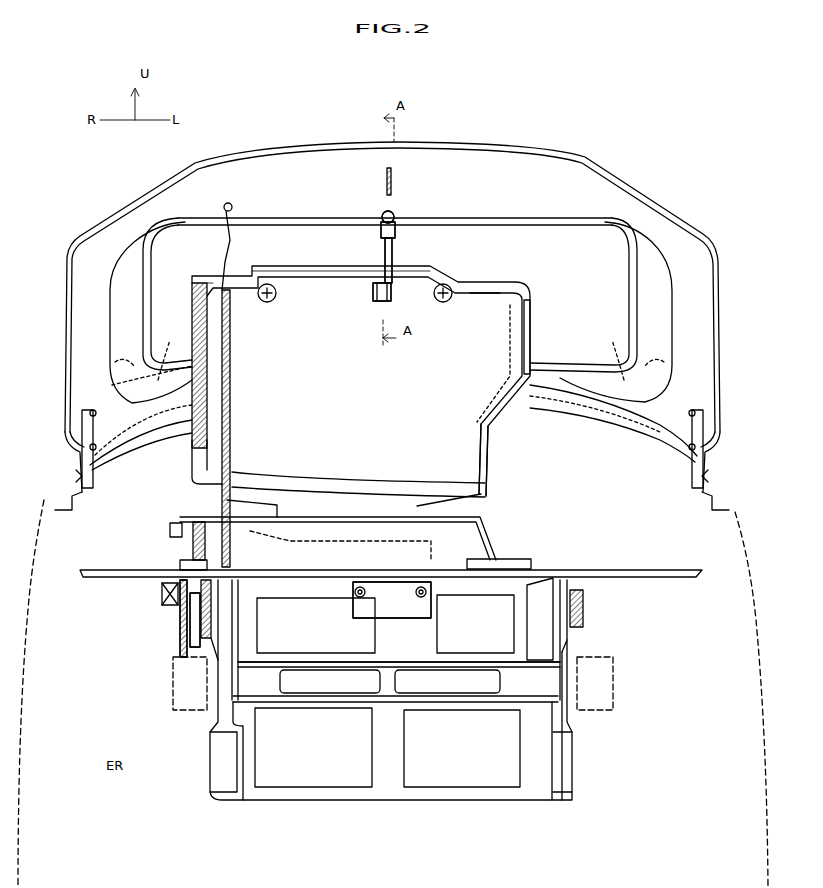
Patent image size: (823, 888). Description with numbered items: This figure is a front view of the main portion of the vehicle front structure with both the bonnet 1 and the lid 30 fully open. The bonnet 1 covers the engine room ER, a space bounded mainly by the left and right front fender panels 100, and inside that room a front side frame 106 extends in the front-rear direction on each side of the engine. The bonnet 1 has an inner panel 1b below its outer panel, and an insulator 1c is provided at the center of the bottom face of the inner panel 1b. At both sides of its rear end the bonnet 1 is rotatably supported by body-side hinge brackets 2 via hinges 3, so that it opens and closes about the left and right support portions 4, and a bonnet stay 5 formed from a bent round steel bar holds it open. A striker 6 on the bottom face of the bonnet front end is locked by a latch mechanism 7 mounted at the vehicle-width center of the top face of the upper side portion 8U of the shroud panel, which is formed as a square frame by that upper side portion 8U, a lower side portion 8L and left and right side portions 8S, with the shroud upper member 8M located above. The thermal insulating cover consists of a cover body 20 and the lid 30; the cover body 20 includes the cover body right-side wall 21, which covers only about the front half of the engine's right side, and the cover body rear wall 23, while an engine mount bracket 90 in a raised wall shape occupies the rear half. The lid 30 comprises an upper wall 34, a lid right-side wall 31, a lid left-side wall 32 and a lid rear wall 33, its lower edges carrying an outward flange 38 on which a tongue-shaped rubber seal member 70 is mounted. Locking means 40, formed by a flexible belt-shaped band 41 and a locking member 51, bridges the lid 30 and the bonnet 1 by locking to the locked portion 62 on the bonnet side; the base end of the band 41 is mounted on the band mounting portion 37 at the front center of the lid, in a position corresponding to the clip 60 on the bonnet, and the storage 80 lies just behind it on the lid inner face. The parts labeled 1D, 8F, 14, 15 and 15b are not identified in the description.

The bonnet 1 is at (562, 148).
The inner panel 1b is at (608, 186).
The insulator 1c is at (552, 218).
The opening seal 1D is at (562, 284).
The hinge bracket 2 is at (66, 512).
The hinge 3 is at (84, 410).
The support portion 4 is at (76, 476).
The bonnet stay 5 is at (224, 256).
The striker 6 is at (393, 186).
The latch mechanism 7 is at (422, 600).
The shroud upper member 8M is at (590, 568).
The battery case front 8F is at (578, 656).
The upper side portion 8U is at (470, 585).
The lower side portion 8L is at (345, 802).
The side portion 8S is at (210, 762).
The frame flange 14 is at (533, 312).
The plate 15 is at (478, 296).
The lower plate 15b is at (488, 555).
The cover body 20 is at (134, 699).
The cover body right-side wall 21 is at (178, 656).
The cover body rear wall 23 is at (500, 539).
The lid 30 is at (524, 286).
The lid right-side wall 31 is at (178, 444).
The lid left-side wall 32 is at (538, 426).
The lid rear wall 33 is at (372, 490).
The upper wall 34 is at (196, 480).
The band mounting portion 37 is at (372, 288).
The flange 38 is at (534, 332).
The locking means 40 is at (408, 252).
The band 41 is at (385, 258).
The locking member 51 is at (381, 238).
The clip 60 is at (396, 214).
The locked portion 62 is at (383, 212).
The seal member 70 is at (492, 448).
The storage 80 is at (370, 310).
The engine mount bracket 90 is at (163, 636).
The front fender panel 100 is at (42, 506).
The front side frame 106 is at (173, 704).